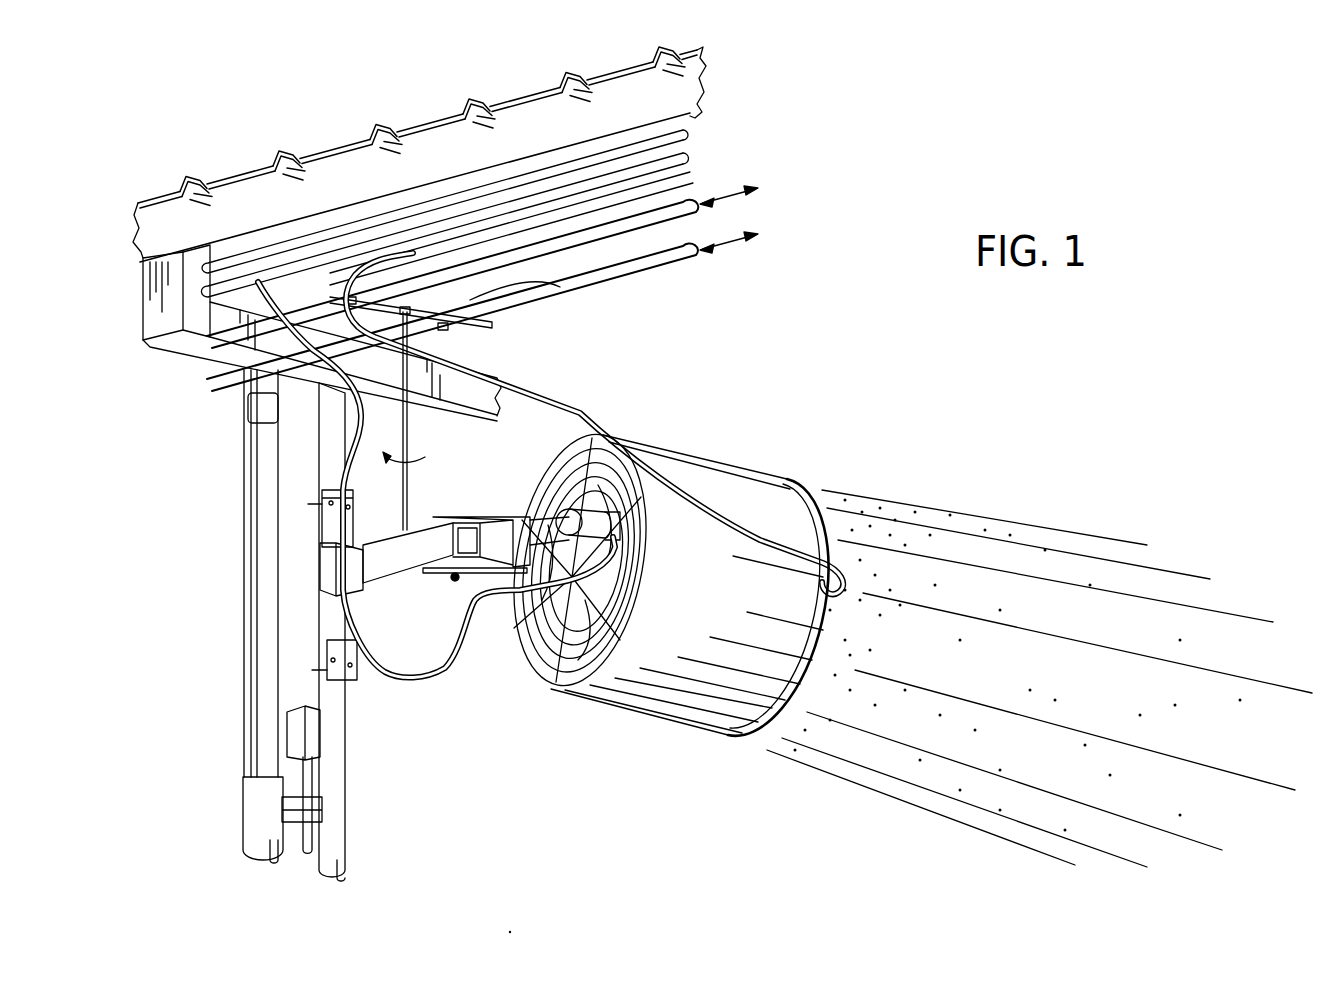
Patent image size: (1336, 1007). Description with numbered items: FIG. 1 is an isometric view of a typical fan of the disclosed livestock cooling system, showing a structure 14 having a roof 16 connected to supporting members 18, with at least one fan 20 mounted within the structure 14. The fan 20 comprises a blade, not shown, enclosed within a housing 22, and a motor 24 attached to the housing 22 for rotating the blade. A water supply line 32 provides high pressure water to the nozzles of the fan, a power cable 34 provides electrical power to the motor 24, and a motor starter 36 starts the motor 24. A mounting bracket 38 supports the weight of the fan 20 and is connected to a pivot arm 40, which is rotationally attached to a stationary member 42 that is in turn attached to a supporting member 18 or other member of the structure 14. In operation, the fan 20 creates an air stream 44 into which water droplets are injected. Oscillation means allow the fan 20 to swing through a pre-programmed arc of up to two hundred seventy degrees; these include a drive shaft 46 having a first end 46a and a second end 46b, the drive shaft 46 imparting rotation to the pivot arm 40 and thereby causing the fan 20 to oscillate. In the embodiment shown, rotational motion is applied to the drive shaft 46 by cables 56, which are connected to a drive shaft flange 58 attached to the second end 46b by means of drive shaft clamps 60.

The structure 14 is at (282, 125).
The roof 16 is at (185, 200).
The supporting members 18 is at (385, 378).
The fan 20 is at (790, 428).
The housing 22 is at (690, 591).
The motor 24 is at (568, 516).
The water supply line 32 is at (563, 401).
The power cable 34 is at (450, 678).
The motor starter 36 is at (318, 556).
The mounting bracket 38 is at (557, 510).
The pivot arm 40 is at (478, 572).
The stationary member 42 is at (378, 548).
The air stream 44 is at (1040, 686).
The drive shaft 46 is at (423, 422).
The first end 46a is at (425, 520).
The second end 46b is at (560, 287).
The cables 56 is at (687, 217).
The drive shaft flange 58 is at (430, 327).
The drive shaft clamps 60 is at (209, 379).